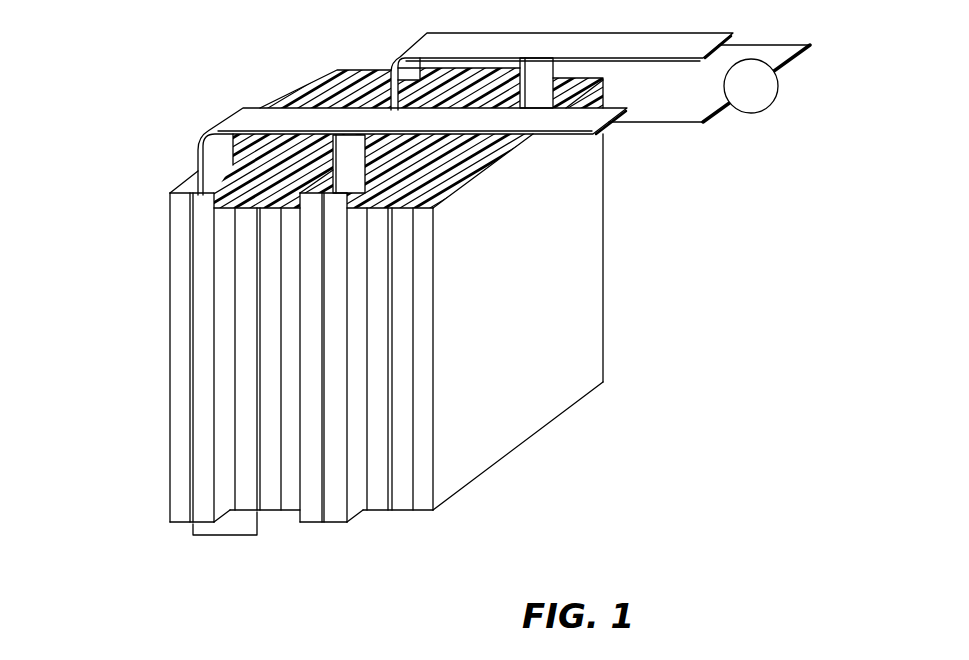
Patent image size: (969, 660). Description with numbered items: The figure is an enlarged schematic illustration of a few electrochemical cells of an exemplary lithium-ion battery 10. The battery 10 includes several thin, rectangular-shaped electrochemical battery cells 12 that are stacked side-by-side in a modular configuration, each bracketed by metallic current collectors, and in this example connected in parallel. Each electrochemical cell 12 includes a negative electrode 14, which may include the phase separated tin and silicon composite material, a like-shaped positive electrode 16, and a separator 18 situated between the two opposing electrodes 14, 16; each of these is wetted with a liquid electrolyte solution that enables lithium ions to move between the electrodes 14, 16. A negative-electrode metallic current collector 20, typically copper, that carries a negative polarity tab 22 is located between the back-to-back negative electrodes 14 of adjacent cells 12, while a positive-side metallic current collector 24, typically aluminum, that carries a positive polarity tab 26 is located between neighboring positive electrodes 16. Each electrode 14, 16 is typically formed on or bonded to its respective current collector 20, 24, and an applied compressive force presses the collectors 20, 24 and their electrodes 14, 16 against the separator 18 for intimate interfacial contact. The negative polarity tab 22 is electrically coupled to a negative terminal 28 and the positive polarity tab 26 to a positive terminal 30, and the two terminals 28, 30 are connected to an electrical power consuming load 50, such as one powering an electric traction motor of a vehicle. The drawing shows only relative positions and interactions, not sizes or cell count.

The lithium-ion battery 10 is at (188, 64).
The electrochemical battery cell 12 is at (218, 540).
The negative electrode 14 is at (200, 440).
The positive electrode 16 is at (268, 268).
The separator 18 is at (222, 405).
The negative-electrode metallic current collector 20 is at (190, 315).
The negative polarity tab 22 is at (200, 160).
The positive-side metallic current collector 24 is at (257, 297).
The positive polarity tab 26 is at (390, 85).
The negative terminal 28 is at (573, 136).
The positive terminal 30 is at (633, 59).
The electrical power consuming load 50 is at (753, 87).